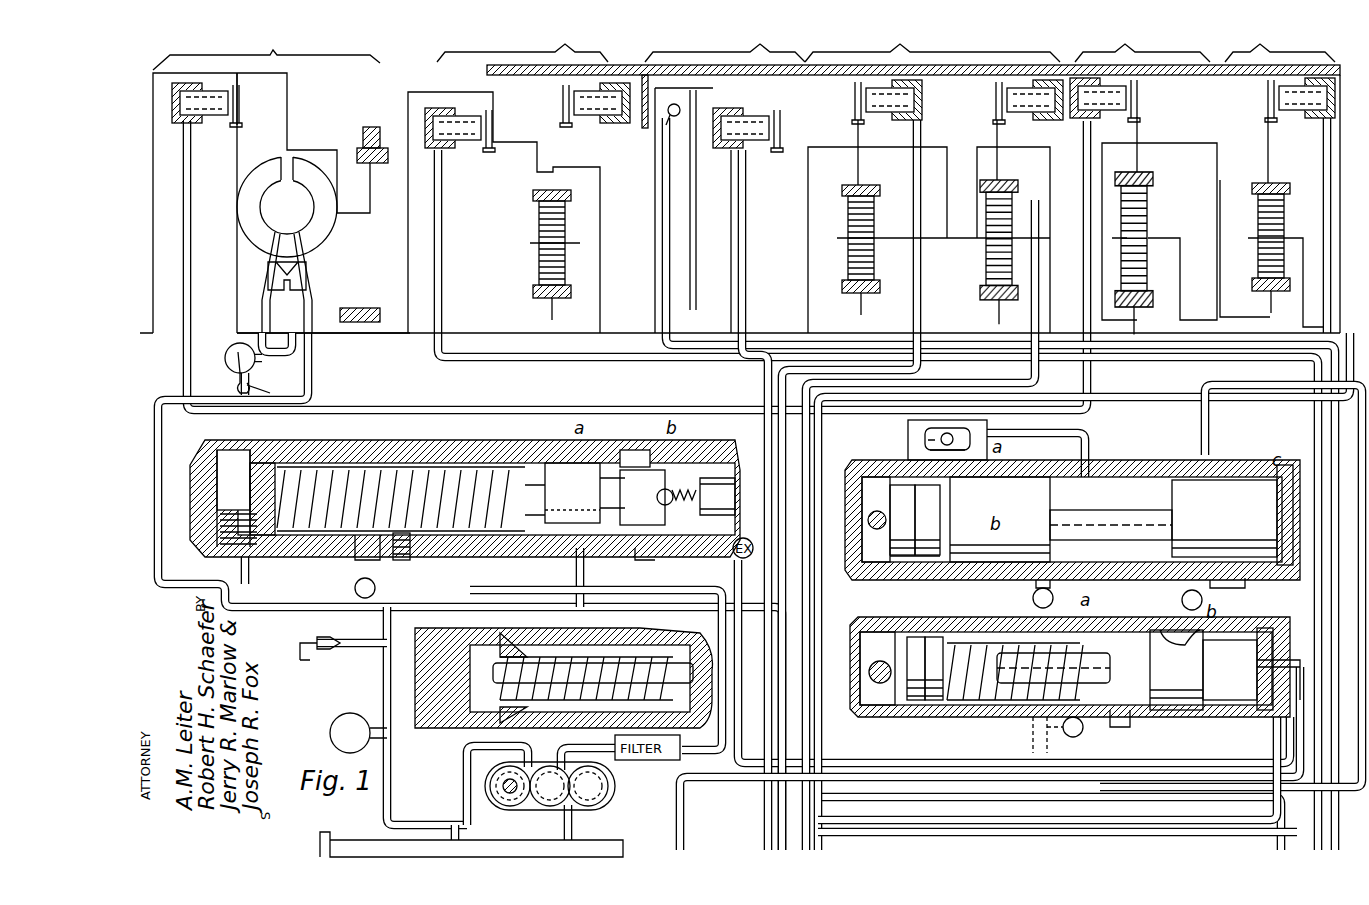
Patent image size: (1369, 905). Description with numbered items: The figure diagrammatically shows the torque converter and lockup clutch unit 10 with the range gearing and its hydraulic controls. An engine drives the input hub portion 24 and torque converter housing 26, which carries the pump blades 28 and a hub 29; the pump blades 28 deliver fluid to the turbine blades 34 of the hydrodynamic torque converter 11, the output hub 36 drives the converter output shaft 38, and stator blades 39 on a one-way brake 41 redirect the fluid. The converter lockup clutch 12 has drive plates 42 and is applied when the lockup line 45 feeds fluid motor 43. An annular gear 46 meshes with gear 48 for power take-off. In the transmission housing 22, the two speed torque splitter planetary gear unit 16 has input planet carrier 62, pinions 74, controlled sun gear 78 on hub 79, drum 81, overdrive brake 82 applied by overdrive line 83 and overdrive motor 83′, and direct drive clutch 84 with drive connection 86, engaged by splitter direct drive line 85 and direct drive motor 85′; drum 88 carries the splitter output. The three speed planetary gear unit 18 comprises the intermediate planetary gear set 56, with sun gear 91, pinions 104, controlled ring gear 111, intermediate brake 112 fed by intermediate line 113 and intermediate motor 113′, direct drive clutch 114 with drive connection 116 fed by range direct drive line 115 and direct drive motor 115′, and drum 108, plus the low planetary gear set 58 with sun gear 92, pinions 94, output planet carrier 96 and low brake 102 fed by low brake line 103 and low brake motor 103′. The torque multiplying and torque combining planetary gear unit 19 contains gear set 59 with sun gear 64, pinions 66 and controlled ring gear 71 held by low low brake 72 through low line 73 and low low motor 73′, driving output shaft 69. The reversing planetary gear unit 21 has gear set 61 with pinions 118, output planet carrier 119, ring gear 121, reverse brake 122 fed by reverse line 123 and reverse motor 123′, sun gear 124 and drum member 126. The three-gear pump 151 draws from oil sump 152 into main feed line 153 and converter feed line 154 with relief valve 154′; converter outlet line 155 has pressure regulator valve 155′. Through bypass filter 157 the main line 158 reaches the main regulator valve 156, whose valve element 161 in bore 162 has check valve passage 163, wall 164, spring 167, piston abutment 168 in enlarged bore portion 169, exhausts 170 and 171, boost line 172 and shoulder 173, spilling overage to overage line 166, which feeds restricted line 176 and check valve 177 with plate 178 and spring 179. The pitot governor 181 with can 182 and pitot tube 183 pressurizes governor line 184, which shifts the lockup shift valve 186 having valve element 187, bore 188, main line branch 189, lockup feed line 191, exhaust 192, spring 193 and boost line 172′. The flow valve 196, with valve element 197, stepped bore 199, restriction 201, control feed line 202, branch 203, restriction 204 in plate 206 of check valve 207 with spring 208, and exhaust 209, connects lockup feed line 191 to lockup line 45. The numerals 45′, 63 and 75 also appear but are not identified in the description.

The torque converter and lockup clutch unit 10 is at (275, 181).
The hydrodynamic torque converter 11 is at (304, 152).
The converter lockup clutch 12 is at (240, 73).
The two speed torque splitter planetary gear unit 16 is at (788, 180).
The three speed planetary gear unit 18 is at (932, 180).
The torque multiplying and torque combining planetary gear unit 19 is at (1146, 173).
The reversing planetary gear unit 21 is at (1280, 180).
The transmission housing 22 is at (375, 308).
The input hub portion 24 is at (148, 337).
The torque converter housing 26 is at (287, 95).
The torque converter pump blades 28 is at (323, 235).
The hub 29 is at (308, 310).
The turbine blades 34 is at (275, 178).
The output hub 36 is at (237, 262).
The converter output shaft 38 is at (395, 336).
The stator blades 39 is at (282, 258).
The one-way brake 41 is at (278, 282).
The drive plates 42 is at (243, 105).
The fluid motor 43 is at (185, 100).
The lockup line 45 is at (1345, 787).
The piston 45′ is at (1185, 556).
The annular gear 46 is at (357, 155).
The gear 48 is at (380, 128).
The intermediate planetary gear set 56 is at (858, 182).
The low planetary gear set 58 is at (995, 180).
The torque multiplying and torque combining planetary gear set 59 is at (1148, 175).
The reversing planetary gear set 61 is at (1255, 188).
The input planet carrier 62 is at (588, 244).
The port 63 is at (1170, 236).
The sun gear 64 is at (1138, 306).
The planetary pinions 66 is at (1138, 258).
The output shaft 69 is at (1210, 326).
The controlled ring gear 71 is at (1150, 180).
The low low brake 72 is at (1142, 98).
The low line 73 is at (1046, 186).
The low low motor 73′ is at (1085, 110).
The planetary pinions 74 is at (540, 222).
The line 75 is at (818, 816).
The controlled sun gear 78 is at (534, 290).
The hub 79 is at (528, 320).
The drum 81 is at (488, 270).
The overdrive brake 82 is at (566, 104).
The overdrive line 83 is at (1336, 820).
The overdrive motor 83′ is at (615, 115).
The direct drive clutch 84 is at (490, 130).
The splitter direct drive line 85 is at (1318, 818).
The direct drive motor 85′ is at (440, 128).
The drive connection 86 is at (410, 250).
The drum 88 is at (560, 167).
The sun gear 91 is at (843, 292).
The sun gear 92 is at (982, 292).
The planetary pinions 94 is at (982, 258).
The output planet carrier 96 is at (1038, 228).
The low brake 102 is at (990, 105).
The low brake line 103 is at (806, 806).
The low brake motor 103′ is at (1050, 120).
The planetary pinions 104 is at (845, 250).
The drum 108 is at (910, 180).
The controlled ring gear 111 is at (843, 192).
The intermediate brake 112 is at (852, 100).
The intermediate line 113 is at (780, 817).
The intermediate motor 113′ is at (915, 110).
The direct drive clutch 114 is at (785, 125).
The range direct drive line 115 is at (766, 800).
The direct drive motor 115′ is at (730, 140).
The drive connection 116 is at (732, 240).
The planetary pinions 118 is at (1290, 204).
The output planet carrier 119 is at (1303, 250).
The ring gear 121 is at (1255, 200).
The reverse brake 122 is at (1265, 102).
The reverse line 123 is at (678, 805).
The reverse motor 123′ is at (1320, 118).
The sun gear 124 is at (1255, 290).
The drum member 126 is at (1196, 212).
The front pump 151 is at (608, 790).
The oil sump 152 is at (430, 843).
The main feed line 153 is at (563, 752).
The converter feed line 154 is at (462, 822).
The relief valve 154′ is at (345, 714).
The converter outlet line 155 is at (268, 350).
The pressure regulator valve 155′ is at (230, 370).
The main regulator valve 156 is at (485, 442).
The bypass filter 157 is at (748, 748).
The main line 158 is at (635, 565).
The valve element 161 is at (555, 528).
The bore 162 is at (662, 470).
The check valve passage 163 is at (575, 493).
The wall 164 is at (700, 545).
The overage line 166 is at (576, 575).
The spring 167 is at (400, 468).
The movable piston abutment 168 is at (235, 470).
The enlarged bore portion 169 is at (330, 463).
The exhaust 170 is at (718, 600).
The exhaust 171 is at (402, 560).
The boost line 172 is at (1277, 803).
The boost line 172′ is at (1033, 724).
The shoulder 173 is at (355, 572).
The restricted line 176 is at (335, 637).
The check valve 177 is at (640, 630).
The plate 178 is at (500, 652).
The spring 179 is at (672, 700).
The pitot governor 181 is at (692, 72).
The annular can 182 is at (640, 40).
The pitot tube 183 is at (666, 125).
The governor line 184 is at (690, 280).
The lockup shift valve 186 is at (985, 618).
The valve element 187 is at (1175, 690).
The bore 188 is at (1225, 690).
The main line branch 189 is at (1128, 720).
The lockup feed line 191 is at (1150, 640).
The exhaust 192 is at (1175, 580).
The spring 193 is at (970, 695).
The flow valve 196 is at (950, 580).
The valve element 197 is at (1140, 540).
The stepped bore 199 is at (1140, 482).
The restriction 201 is at (1230, 592).
The control feed line 202 is at (1209, 450).
The branch 203 is at (1082, 446).
The restriction 204 is at (918, 426).
The plate 206 is at (908, 440).
The check valve 207 is at (1000, 519).
The spring 208 is at (978, 436).
The exhaust 209 is at (1036, 590).